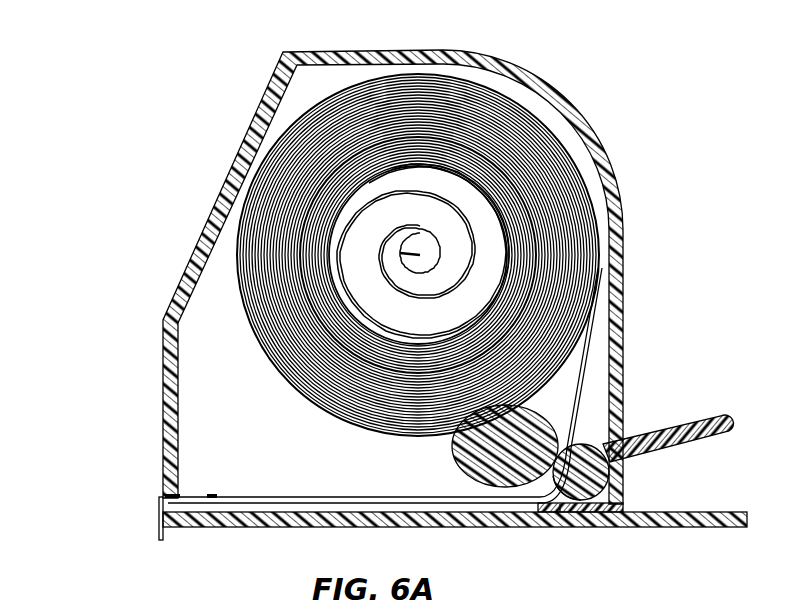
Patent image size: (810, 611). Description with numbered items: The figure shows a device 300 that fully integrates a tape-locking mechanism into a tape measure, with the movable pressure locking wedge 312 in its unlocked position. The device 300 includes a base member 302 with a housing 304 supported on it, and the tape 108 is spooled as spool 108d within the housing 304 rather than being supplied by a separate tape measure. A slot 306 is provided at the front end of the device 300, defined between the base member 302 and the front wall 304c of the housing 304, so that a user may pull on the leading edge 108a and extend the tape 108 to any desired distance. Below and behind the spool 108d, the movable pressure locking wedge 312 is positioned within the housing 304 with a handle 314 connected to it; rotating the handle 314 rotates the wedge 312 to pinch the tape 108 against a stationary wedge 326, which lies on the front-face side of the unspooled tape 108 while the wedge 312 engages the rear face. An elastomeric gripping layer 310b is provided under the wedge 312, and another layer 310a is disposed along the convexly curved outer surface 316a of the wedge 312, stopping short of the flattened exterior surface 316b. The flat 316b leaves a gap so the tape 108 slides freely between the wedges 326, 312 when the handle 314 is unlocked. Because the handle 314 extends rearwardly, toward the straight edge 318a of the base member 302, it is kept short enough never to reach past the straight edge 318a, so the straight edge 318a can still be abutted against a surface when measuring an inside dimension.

The device 300 is at (236, 104).
The housing 304 is at (505, 70).
The front wall 304c is at (163, 373).
The base member 302 is at (652, 528).
The straight edge 318a is at (745, 528).
The tape 108 is at (330, 497).
The spool 108d is at (303, 399).
The leading edge 108a is at (160, 537).
The slot 306 is at (163, 497).
The stationary wedge 326 is at (505, 446).
The movable pressure locking wedge 312 is at (606, 470).
The handle 314 is at (719, 432).
The convexly curved outer surface 316a is at (548, 512).
The flattened exterior surface 316b is at (623, 404).
The elastomeric gripping layer 310a is at (599, 513).
The elastomeric gripping layer 310b is at (578, 513).